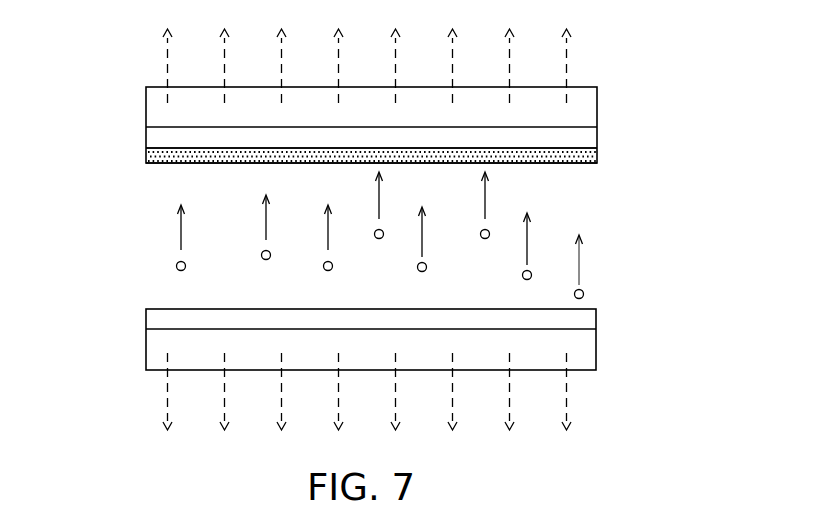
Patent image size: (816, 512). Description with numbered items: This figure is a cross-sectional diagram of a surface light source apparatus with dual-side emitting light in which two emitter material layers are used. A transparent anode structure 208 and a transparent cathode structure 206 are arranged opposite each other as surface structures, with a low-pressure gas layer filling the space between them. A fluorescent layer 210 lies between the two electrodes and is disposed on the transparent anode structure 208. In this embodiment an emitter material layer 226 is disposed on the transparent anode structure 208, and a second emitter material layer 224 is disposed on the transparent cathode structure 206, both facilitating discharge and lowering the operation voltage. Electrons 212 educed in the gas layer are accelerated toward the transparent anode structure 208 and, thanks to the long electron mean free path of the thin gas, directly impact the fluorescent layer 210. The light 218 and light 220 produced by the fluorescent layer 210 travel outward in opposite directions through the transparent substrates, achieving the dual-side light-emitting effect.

The transparent cathode structure 206 is at (586, 345).
The transparent anode structure 208 is at (585, 112).
The fluorescent layer 210 is at (585, 155).
The electrons 212 is at (173, 266).
The light 218 is at (168, 67).
The light 220 is at (566, 391).
The emitter material layer 224 is at (586, 318).
The emitter material layer 226 is at (585, 132).